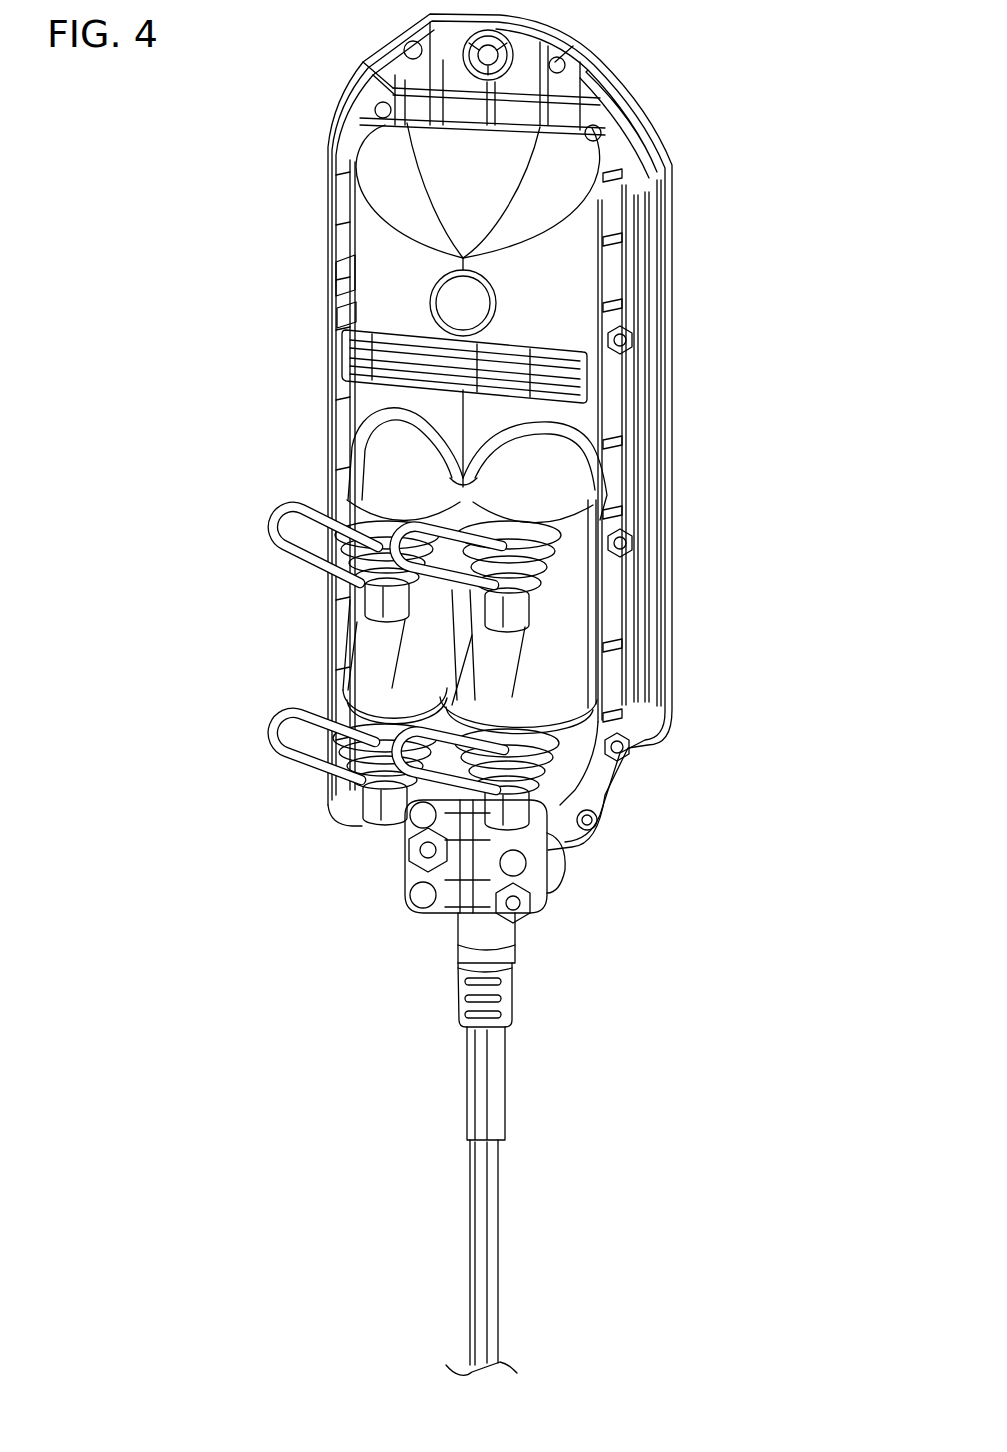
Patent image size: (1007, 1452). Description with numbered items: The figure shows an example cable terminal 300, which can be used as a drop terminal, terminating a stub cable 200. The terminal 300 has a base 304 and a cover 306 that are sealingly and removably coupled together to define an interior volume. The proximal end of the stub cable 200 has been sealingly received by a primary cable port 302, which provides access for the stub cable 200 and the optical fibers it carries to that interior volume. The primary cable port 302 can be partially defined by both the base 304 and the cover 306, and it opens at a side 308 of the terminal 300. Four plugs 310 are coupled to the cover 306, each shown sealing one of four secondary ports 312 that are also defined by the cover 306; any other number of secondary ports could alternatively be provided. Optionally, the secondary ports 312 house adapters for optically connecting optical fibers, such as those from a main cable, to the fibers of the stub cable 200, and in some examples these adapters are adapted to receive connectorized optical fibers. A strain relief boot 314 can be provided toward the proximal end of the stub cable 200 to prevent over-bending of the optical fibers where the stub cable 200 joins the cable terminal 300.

The stub cable 200 is at (487, 1268).
The cable terminal 300 is at (693, 125).
The primary cable port 302 is at (442, 933).
The base 304 is at (665, 655).
The cover 306 is at (373, 173).
The side 308 is at (545, 925).
The plug 310 is at (372, 600).
The secondary port 312 is at (367, 537).
The strain relief boot 314 is at (505, 997).